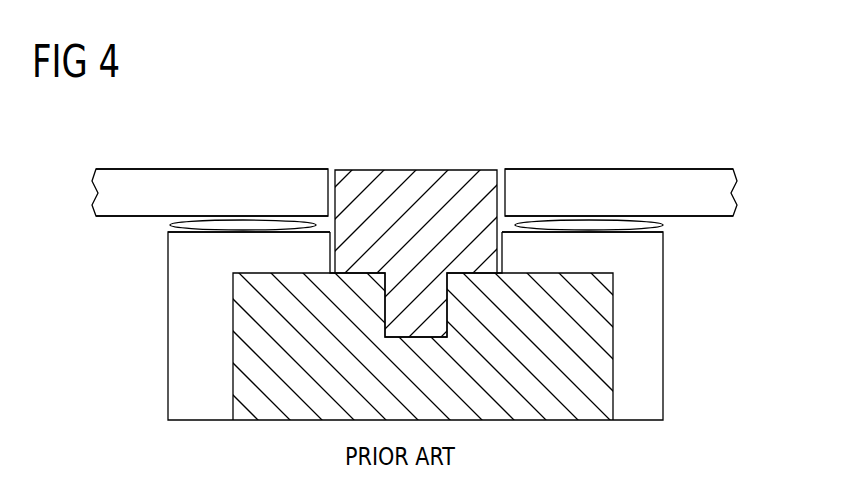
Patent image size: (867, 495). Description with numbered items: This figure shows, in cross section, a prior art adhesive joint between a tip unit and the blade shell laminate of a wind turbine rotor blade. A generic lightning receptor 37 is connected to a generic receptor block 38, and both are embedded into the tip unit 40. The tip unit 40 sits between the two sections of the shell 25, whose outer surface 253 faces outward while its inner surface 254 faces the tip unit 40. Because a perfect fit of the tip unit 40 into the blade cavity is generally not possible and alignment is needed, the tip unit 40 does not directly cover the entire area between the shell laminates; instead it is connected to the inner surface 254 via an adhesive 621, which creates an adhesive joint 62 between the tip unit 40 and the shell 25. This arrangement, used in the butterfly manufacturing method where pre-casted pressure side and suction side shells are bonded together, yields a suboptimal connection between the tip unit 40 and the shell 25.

The shell 25 is at (185, 183).
The outer surface 253 is at (280, 170).
The inner surface 254 is at (118, 217).
The lightning receptor 37 is at (417, 179).
The receptor block 38 is at (483, 407).
The tip unit 40 is at (180, 353).
The adhesive joint 62 is at (163, 223).
The adhesive 621 is at (226, 229).